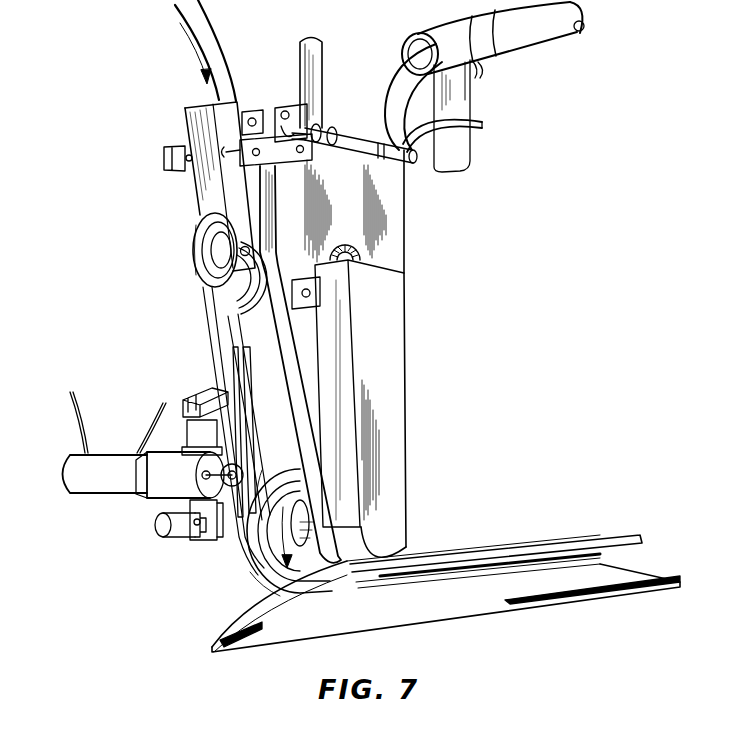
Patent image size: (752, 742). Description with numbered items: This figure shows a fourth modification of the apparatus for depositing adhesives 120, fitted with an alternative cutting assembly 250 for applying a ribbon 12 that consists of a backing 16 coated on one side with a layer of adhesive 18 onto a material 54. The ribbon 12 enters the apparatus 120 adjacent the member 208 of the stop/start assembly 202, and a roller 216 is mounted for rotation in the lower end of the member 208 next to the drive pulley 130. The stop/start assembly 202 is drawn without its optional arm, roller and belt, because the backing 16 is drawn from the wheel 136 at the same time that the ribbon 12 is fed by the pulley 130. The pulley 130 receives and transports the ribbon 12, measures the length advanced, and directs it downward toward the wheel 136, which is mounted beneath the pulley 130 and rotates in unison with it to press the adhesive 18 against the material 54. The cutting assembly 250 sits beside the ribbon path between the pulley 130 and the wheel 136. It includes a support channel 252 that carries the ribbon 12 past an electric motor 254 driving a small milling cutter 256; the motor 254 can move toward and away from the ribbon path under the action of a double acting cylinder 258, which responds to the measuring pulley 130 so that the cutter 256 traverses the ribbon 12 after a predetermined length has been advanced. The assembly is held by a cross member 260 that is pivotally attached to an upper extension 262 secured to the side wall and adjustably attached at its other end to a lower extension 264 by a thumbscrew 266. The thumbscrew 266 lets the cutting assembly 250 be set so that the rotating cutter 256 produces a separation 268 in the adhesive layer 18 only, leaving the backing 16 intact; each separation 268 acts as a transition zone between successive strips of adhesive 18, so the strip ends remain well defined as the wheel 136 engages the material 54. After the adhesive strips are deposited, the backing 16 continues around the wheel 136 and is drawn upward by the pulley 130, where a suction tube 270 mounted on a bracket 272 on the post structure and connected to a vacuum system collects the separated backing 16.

The adhesive ribbon 12 is at (215, 50).
The backing 16 is at (390, 87).
The adhesive layer 18 is at (609, 538).
The material 54 is at (458, 615).
The apparatus for depositing adhesives 120 is at (433, 326).
The drive pulley 130 is at (257, 280).
The wheel 136 is at (265, 582).
The stop/start assembly 202 is at (150, 150).
The member 208 is at (207, 178).
The roller 216 is at (192, 244).
The cutting assembly 250 is at (137, 467).
The support channel 252 is at (234, 350).
The electric motor 254 is at (167, 475).
The milling cutter 256 is at (223, 520).
The double acting cylinder 258 is at (83, 468).
The cross member 260 is at (198, 440).
The upper extension 262 is at (212, 392).
The lower extension 264 is at (262, 584).
The thumbscrew 266 is at (195, 530).
The separation 268 is at (265, 473).
The suction tube 270 is at (522, 33).
The bracket 272 is at (468, 162).